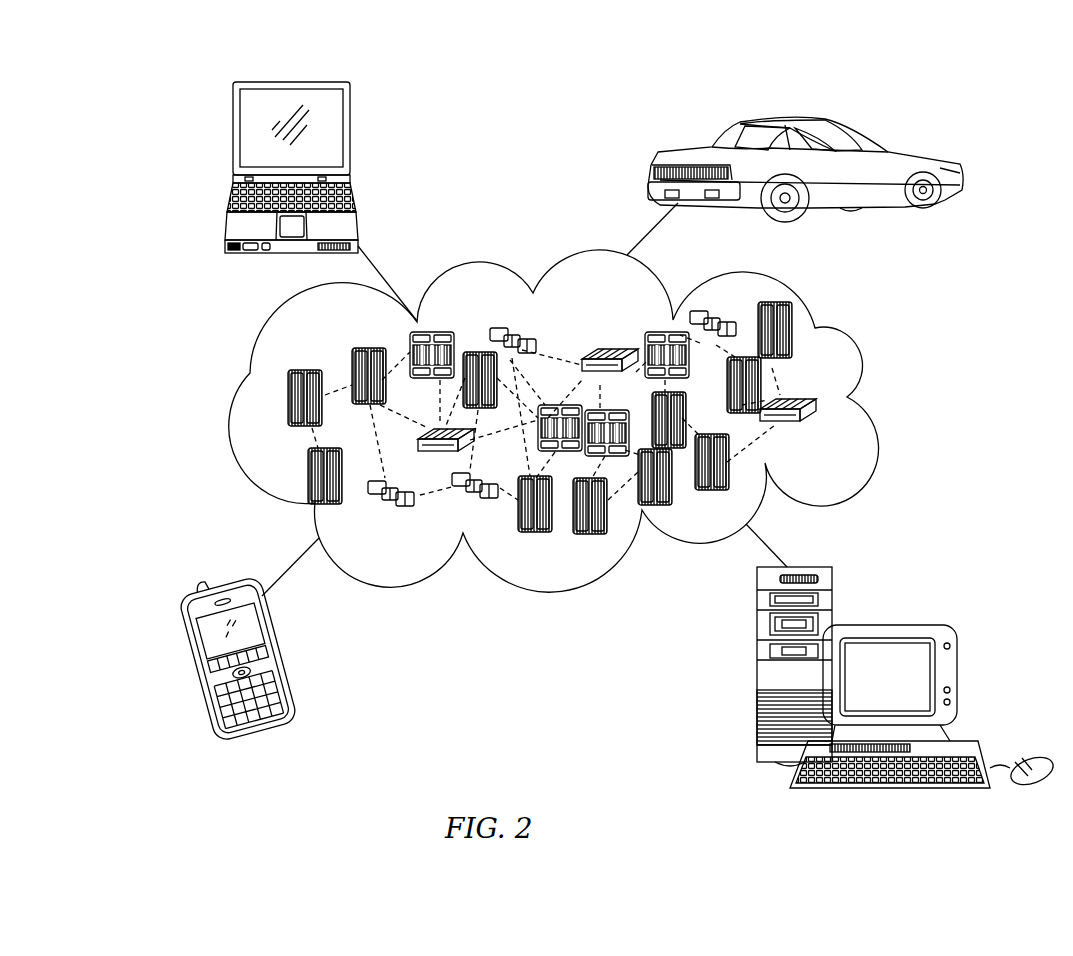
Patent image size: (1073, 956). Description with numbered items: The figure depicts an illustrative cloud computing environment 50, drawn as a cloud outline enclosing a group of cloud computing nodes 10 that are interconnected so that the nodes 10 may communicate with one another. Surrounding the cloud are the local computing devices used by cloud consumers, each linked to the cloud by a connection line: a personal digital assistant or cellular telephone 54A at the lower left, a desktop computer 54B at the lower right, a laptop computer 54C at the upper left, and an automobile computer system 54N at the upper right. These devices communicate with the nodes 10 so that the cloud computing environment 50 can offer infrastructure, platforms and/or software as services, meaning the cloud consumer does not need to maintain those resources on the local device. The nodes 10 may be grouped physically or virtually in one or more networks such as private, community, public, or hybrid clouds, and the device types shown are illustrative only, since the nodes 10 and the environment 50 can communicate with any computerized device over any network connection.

The cloud computing environment 50 is at (857, 348).
The cloud computing nodes 10 is at (852, 458).
The personal digital assistant or cellular telephone 54A is at (190, 665).
The desktop computer 54B is at (903, 625).
The laptop computer 54C is at (258, 81).
The automobile computer system 54N is at (876, 140).